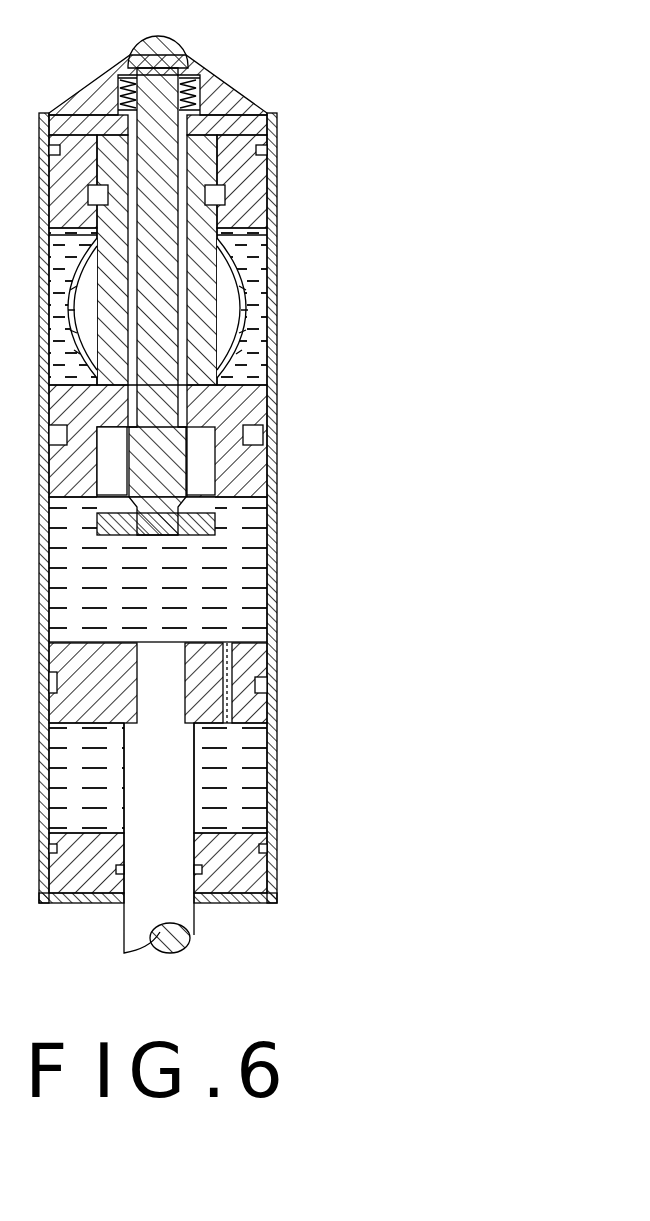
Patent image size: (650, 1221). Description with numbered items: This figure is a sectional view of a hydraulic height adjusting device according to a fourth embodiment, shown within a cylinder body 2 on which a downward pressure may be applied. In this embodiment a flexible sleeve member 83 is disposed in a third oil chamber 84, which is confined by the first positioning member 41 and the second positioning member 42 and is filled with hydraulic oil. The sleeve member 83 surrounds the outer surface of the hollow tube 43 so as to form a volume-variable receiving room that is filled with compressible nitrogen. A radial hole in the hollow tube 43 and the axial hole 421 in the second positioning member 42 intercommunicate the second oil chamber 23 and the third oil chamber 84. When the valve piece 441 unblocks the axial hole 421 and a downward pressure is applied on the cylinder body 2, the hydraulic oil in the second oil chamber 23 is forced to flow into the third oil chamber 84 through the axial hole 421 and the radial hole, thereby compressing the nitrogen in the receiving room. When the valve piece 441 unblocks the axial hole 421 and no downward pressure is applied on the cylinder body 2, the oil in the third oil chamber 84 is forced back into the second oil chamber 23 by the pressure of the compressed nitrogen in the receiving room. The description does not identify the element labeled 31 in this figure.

The first positioning member 41 is at (268, 176).
The hollow tube 43 is at (262, 247).
The flexible sleeve member 83 is at (268, 298).
The third oil chamber 84 is at (268, 338).
The cylinder tube 31 is at (268, 377).
The second positioning member 42 is at (268, 407).
The axial hole 421 is at (205, 468).
The valve piece 441 is at (262, 517).
The second oil chamber 23 is at (258, 555).
The cylinder body 2 is at (262, 606).